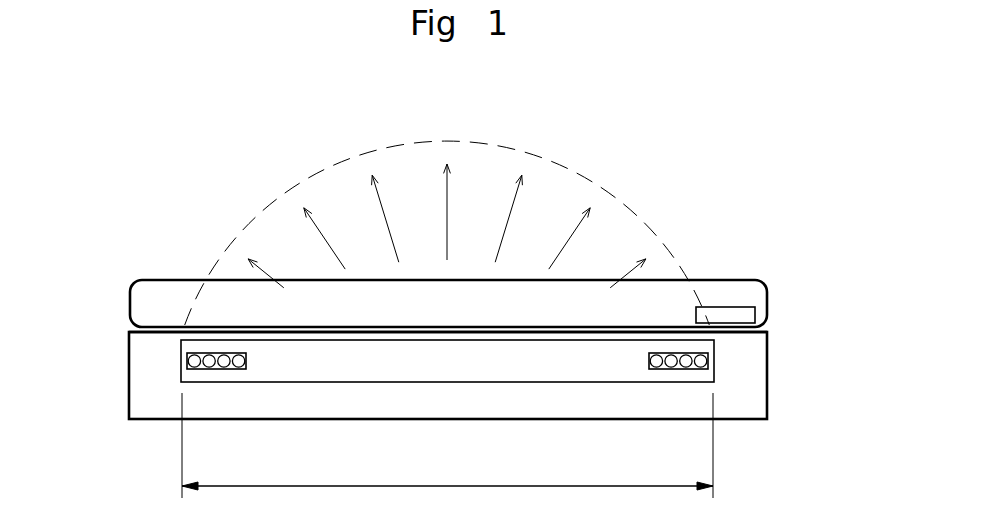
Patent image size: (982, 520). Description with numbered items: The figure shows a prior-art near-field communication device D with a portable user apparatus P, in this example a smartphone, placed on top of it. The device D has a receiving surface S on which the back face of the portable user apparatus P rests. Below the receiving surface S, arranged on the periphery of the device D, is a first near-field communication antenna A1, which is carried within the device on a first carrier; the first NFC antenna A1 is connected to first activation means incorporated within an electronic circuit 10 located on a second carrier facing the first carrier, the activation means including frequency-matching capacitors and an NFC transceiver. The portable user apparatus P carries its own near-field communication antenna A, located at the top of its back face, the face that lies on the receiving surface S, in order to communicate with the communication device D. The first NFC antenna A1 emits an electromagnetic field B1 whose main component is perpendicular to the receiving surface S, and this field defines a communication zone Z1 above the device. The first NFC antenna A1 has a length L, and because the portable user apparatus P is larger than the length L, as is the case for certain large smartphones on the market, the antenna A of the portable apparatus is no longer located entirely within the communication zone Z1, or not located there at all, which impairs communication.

The portable user apparatus P is at (727, 280).
The near-field communication antenna A is at (742, 315).
The near-field communication device D is at (720, 358).
The receiving surface S is at (158, 329).
The electronic circuit 10 is at (713, 372).
The first near-field communication antenna A1 is at (209, 368).
The length L is at (447, 445).
The communication zone Z1 is at (553, 161).
The electromagnetic field B1 is at (447, 223).